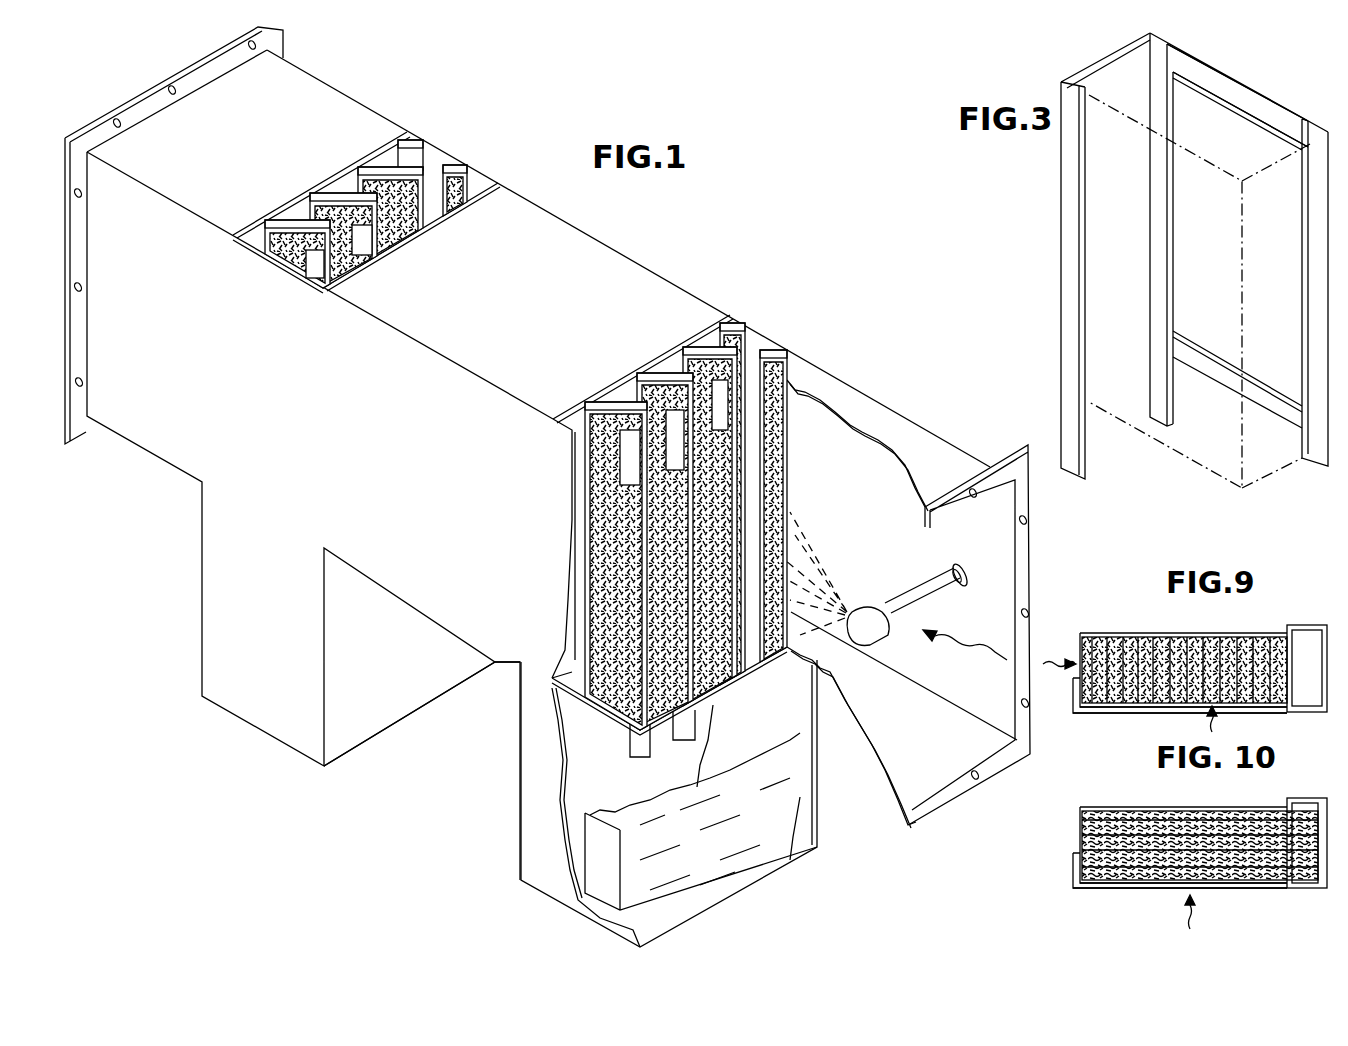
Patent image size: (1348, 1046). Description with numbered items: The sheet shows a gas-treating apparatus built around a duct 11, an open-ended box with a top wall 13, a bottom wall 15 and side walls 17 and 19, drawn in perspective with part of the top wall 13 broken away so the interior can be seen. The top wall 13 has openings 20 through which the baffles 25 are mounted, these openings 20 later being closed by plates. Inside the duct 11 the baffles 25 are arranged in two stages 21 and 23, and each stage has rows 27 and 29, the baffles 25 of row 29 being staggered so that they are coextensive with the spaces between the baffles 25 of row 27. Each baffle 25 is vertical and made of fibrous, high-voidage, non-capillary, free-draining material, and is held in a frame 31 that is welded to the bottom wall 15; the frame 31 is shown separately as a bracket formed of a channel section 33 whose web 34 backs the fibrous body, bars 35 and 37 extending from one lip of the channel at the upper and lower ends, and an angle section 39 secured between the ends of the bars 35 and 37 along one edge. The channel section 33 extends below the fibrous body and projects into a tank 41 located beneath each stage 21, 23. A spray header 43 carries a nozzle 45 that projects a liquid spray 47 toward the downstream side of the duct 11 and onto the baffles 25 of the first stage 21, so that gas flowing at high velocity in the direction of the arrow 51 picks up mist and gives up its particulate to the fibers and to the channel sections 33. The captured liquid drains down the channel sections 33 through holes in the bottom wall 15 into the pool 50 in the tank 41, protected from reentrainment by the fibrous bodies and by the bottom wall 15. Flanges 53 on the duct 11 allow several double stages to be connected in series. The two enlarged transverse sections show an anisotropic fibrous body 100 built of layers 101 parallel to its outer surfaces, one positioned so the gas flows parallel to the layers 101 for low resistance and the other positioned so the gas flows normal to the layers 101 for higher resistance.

In FIG. 1, the duct 11 is at (314, 424).
In FIG. 1, the top wall 13 is at (943, 453).
In FIG. 1, the bottom wall 15 is at (903, 774).
In FIG. 1, the side wall 17 is at (973, 703).
In FIG. 1, the side wall 19 is at (517, 644).
In FIG. 1, the openings 20 is at (478, 182).
In FIG. 1, the first stage 21 is at (757, 337).
In FIG. 1, the second stage 23 is at (437, 157).
In FIG. 1, the baffles 25 is at (360, 178).
In FIG. 1, the row 27 is at (793, 343).
In FIG. 1, the row 29 is at (753, 316).
In FIG. 3, the frame 31 is at (1220, 69).
In FIG. 9, the frame 31 is at (1172, 716).
In FIG. 10, the frame 31 is at (1159, 805).
In FIG. 3, the channel section 33 is at (1100, 59).
In FIG. 9, the channel section 33 is at (1322, 662).
In FIG. 10, the channel section 33 is at (1322, 853).
In FIG. 3, the web 34 is at (1119, 414).
In FIG. 3, the bar 35 is at (1250, 100).
In FIG. 3, the bar 37 is at (1261, 395).
In FIG. 3, the angle section 39 is at (1317, 276).
In FIG. 1, the tank 41 is at (287, 735).
In FIG. 1, the spray header 43 is at (918, 600).
In FIG. 1, the nozzle 45 is at (855, 620).
In FIG. 1, the spray 47 is at (812, 552).
In FIG. 1, the pool 50 is at (810, 735).
In FIG. 1, the arrow 51 is at (968, 657).
In FIG. 1, the flanges 53 is at (80, 305).
In FIG. 9, the fibrous body 100 is at (1210, 624).
In FIG. 10, the fibrous body 100 is at (1196, 801).
In FIG. 9, the layers 101 is at (1178, 642).
In FIG. 10, the layers 101 is at (1080, 853).